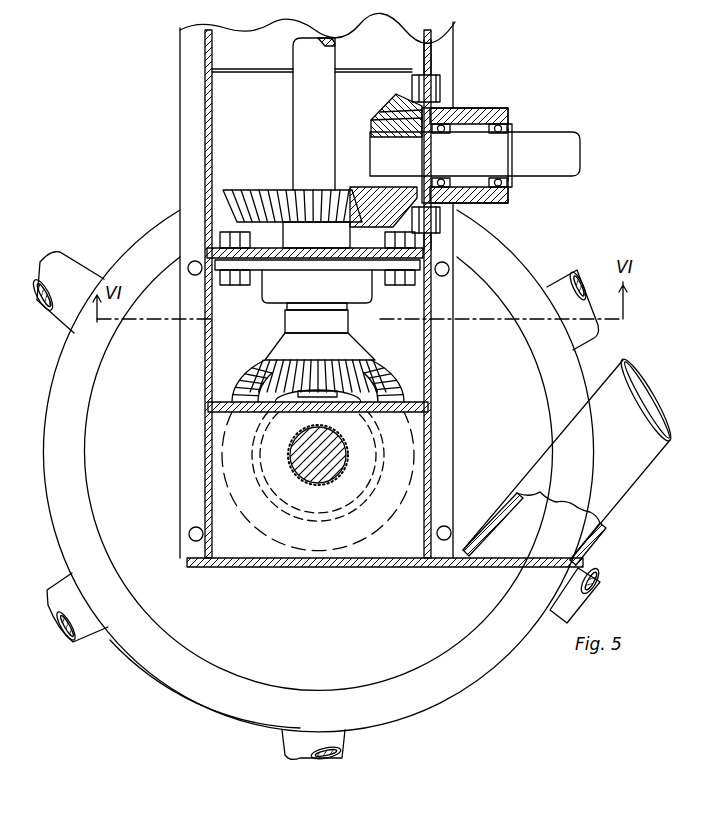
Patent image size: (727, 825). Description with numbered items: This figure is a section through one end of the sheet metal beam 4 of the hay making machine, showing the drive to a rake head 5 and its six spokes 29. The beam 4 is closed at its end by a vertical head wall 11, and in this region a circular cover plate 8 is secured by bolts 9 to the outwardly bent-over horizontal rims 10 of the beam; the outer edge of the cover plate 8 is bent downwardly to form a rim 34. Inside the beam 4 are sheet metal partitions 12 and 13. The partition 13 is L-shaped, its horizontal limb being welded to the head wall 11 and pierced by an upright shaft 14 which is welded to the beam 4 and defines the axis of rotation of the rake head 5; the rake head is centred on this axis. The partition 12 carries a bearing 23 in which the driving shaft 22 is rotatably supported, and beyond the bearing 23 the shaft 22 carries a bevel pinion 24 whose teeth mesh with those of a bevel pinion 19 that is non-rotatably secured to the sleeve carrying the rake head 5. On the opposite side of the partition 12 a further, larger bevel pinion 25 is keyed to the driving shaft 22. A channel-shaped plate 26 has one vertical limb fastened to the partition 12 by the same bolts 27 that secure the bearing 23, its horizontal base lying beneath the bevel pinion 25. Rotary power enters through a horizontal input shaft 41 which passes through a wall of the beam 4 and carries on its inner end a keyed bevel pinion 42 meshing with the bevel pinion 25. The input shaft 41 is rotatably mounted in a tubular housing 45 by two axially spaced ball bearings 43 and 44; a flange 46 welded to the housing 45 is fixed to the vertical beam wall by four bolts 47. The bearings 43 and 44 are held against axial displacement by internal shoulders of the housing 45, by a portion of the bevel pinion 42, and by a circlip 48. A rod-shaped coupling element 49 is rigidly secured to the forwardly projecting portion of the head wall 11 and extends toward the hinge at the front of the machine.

The beam 4 is at (208, 375).
The rake head 5 is at (75, 245).
The cover plate 8 is at (225, 657).
The bolts 9 is at (190, 273).
The horizontal rims 10 is at (190, 57).
The head wall 11 is at (343, 567).
The partition 12 is at (323, 257).
The partition 13 is at (235, 413).
The upright shaft 14 is at (303, 453).
The bevel pinion 19 is at (260, 377).
The driving shaft 22 is at (300, 50).
The bearing 23 is at (278, 307).
The bevel pinion 24 is at (343, 343).
The bevel pinion 25 is at (270, 172).
The plate 26 is at (225, 100).
The bolts 27 is at (245, 283).
The spokes 29 is at (577, 260).
The rim 34 is at (148, 667).
The input shaft 41 is at (547, 147).
The bevel pinion 42 is at (383, 108).
The ball bearing 43 is at (447, 133).
The ball bearing 44 is at (493, 130).
The tubular housing 45 is at (483, 197).
The flange 46 is at (430, 72).
The bolts 47 is at (440, 87).
The circlip 48 is at (515, 182).
The coupling element 49 is at (623, 363).